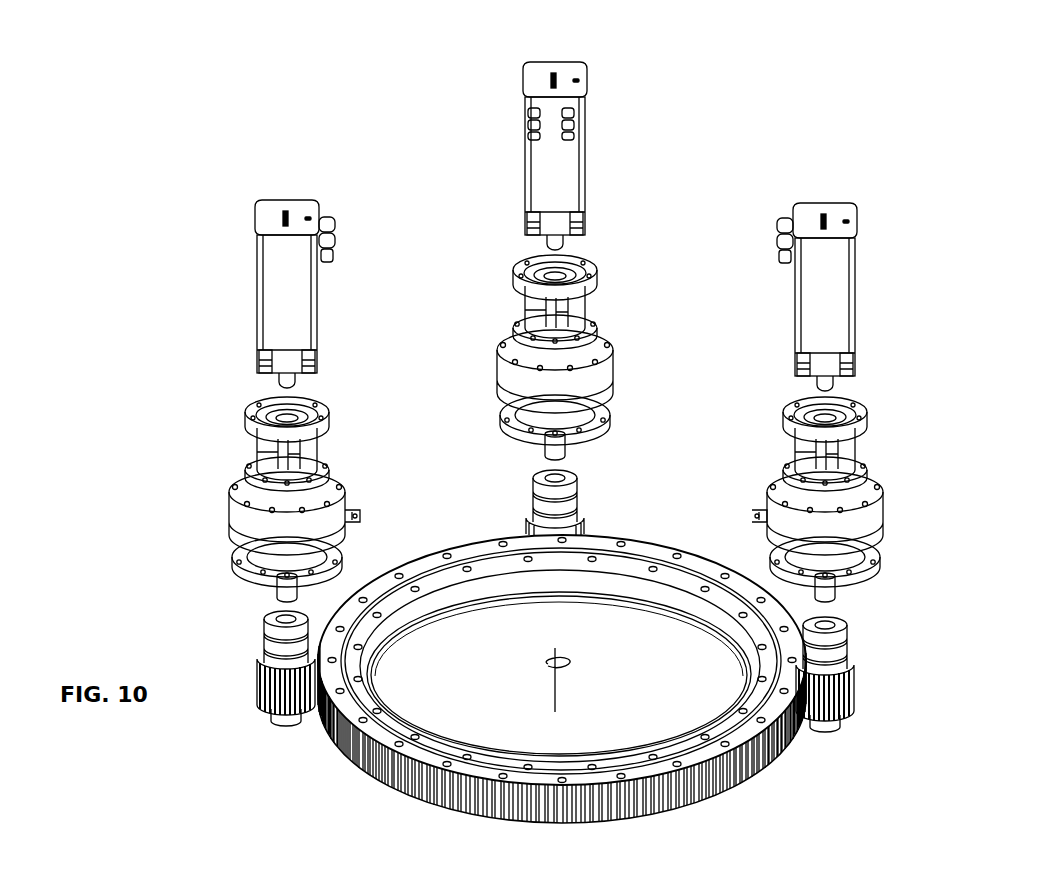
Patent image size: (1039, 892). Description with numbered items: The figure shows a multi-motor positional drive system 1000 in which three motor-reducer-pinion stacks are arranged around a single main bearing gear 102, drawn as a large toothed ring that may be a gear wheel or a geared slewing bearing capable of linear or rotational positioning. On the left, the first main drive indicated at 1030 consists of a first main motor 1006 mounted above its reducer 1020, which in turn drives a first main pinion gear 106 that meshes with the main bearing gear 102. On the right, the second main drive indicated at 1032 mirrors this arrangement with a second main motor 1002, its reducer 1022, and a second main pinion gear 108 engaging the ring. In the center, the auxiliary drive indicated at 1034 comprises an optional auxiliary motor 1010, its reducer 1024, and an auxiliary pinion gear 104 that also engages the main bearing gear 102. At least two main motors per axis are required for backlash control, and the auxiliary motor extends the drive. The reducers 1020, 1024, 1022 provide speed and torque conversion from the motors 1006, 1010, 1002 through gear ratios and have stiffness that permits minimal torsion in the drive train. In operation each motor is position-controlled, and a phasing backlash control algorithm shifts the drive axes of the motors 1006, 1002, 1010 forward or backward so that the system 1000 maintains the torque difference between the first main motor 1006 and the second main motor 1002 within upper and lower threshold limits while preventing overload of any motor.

The system 1000 is at (913, 102).
The main bearing gear 102 is at (755, 768).
The auxiliary pinion gear 104 is at (578, 490).
The first main pinion gear 106 is at (287, 720).
The second main pinion gear 108 is at (848, 646).
The second main motor 1002 is at (857, 300).
The first main motor 1006 is at (320, 298).
The auxiliary motor 1010 is at (588, 135).
The reducer 1020 is at (328, 450).
The reducer 1022 is at (868, 448).
The reducer 1024 is at (598, 335).
The first main drive assembly 1030 is at (295, 180).
The second main drive assembly 1032 is at (820, 179).
The auxiliary drive assembly 1034 is at (608, 90).